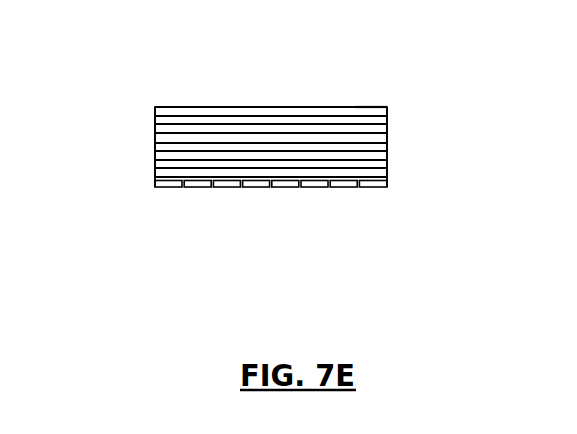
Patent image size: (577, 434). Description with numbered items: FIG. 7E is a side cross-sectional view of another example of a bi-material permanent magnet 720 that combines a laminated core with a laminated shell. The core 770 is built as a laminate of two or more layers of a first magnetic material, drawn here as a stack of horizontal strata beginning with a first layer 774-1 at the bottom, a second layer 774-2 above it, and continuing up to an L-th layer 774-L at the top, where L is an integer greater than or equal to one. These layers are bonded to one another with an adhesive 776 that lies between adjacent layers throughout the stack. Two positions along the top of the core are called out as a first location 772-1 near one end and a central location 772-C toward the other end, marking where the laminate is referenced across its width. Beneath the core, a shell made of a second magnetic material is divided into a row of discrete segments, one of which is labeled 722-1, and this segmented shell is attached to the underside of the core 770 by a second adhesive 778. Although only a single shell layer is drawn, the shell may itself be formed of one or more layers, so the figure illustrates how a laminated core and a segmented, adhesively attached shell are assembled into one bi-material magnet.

The display device 720 is at (299, 144).
The core 770 is at (349, 133).
The center column 772-C is at (173, 106).
The first column 772-1 is at (372, 106).
The L-th layer 774-L is at (387, 112).
The second layer 774-2 is at (387, 162).
The first layer 774-1 is at (387, 172).
The adhesive 776 is at (328, 110).
The adhesive 778 is at (196, 188).
The first pad row 722-1 is at (332, 214).